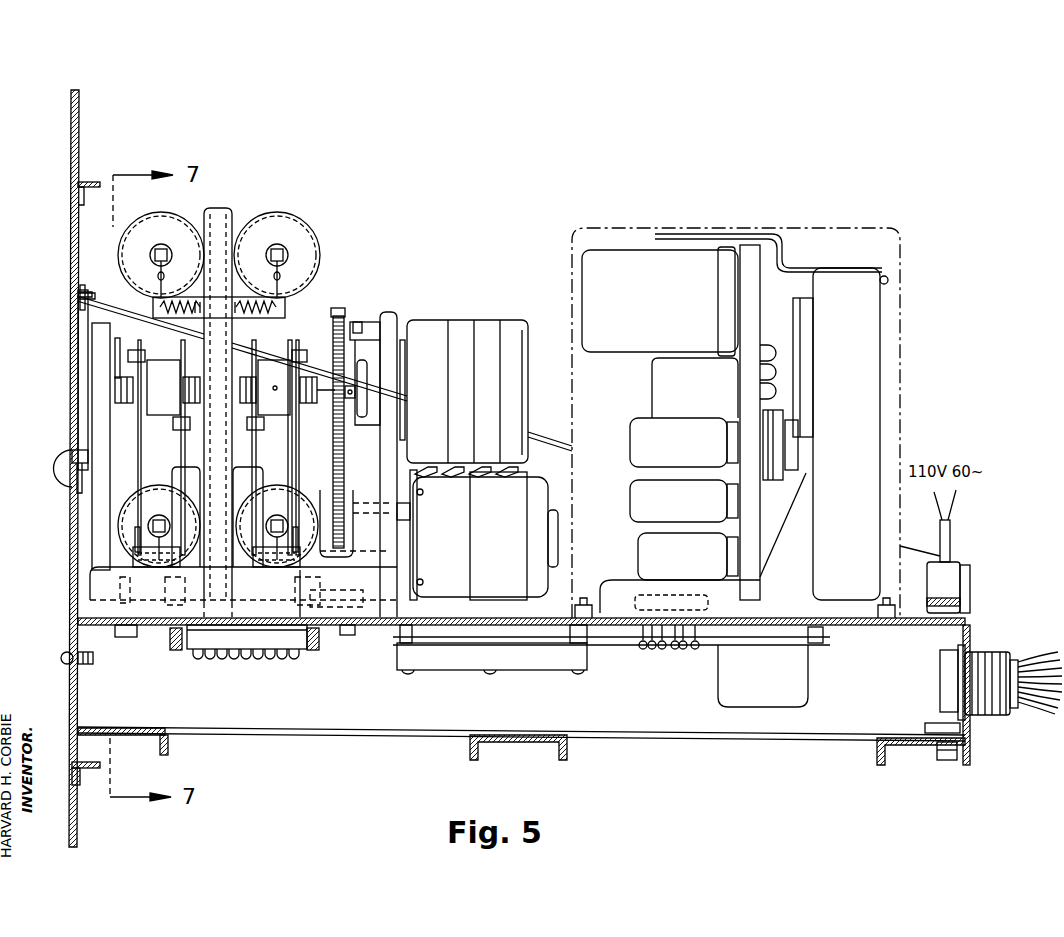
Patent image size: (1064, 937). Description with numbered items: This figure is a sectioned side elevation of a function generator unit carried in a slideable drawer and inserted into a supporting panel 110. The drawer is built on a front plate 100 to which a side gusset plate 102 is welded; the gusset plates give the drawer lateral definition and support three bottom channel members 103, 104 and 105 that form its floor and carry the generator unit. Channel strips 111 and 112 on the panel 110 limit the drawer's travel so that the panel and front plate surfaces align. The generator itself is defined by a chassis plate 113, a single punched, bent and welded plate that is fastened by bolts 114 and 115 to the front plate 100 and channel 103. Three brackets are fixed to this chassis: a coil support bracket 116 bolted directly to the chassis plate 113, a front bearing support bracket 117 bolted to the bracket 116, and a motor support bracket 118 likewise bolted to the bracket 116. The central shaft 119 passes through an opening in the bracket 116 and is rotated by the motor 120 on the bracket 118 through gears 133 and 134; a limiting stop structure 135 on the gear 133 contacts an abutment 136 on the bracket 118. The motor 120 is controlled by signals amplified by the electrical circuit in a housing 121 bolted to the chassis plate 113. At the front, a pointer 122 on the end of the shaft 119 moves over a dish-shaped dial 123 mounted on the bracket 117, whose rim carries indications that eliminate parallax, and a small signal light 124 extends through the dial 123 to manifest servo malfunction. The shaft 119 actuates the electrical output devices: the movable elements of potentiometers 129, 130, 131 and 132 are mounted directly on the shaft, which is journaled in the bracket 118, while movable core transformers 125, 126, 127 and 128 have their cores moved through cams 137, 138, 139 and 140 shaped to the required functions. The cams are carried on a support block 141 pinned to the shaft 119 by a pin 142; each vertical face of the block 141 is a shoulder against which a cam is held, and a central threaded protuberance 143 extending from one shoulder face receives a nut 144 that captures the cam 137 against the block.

The front plate 100 is at (72, 232).
The side gusset plate 102 is at (553, 440).
The bottom channel member 103 is at (877, 748).
The bottom channel member 104 is at (567, 748).
The bottom channel member 105 is at (170, 746).
The supporting panel 110 is at (72, 125).
The channel strip 111 is at (91, 181).
The channel strip 112 is at (93, 768).
The chassis plate 113 is at (752, 738).
The bolt 114 is at (92, 662).
The bolt 115 is at (932, 726).
The coil support bracket 116 is at (223, 208).
The front bearing support bracket 117 is at (100, 323).
The motor support bracket 118 is at (400, 298).
The shaft 119 is at (318, 403).
The motor 120 is at (512, 548).
The housing 121 is at (900, 333).
The pointer 122 is at (78, 328).
The dial 123 is at (82, 285).
The signal light 124 is at (72, 450).
The movable core transformer 125 is at (164, 212).
The movable core transformer 126 is at (291, 216).
The movable core transformer 127 is at (127, 505).
The movable core transformer 128 is at (303, 503).
The potentiometer 129 is at (443, 320).
The potentiometer 130 is at (470, 321).
The potentiometer 131 is at (492, 321).
The potentiometer 132 is at (512, 321).
The gear 133 is at (338, 310).
The gear 134 is at (338, 475).
The limiting stop structure 135 is at (360, 322).
The abutment 136 is at (374, 313).
The cam 137 is at (140, 352).
The cam 138 is at (188, 440).
The cam 139 is at (250, 438).
The cam 140 is at (297, 350).
The support block 141 is at (175, 420).
The pin 142 is at (163, 391).
The threaded protuberance 143 is at (118, 365).
The nut 144 is at (133, 400).